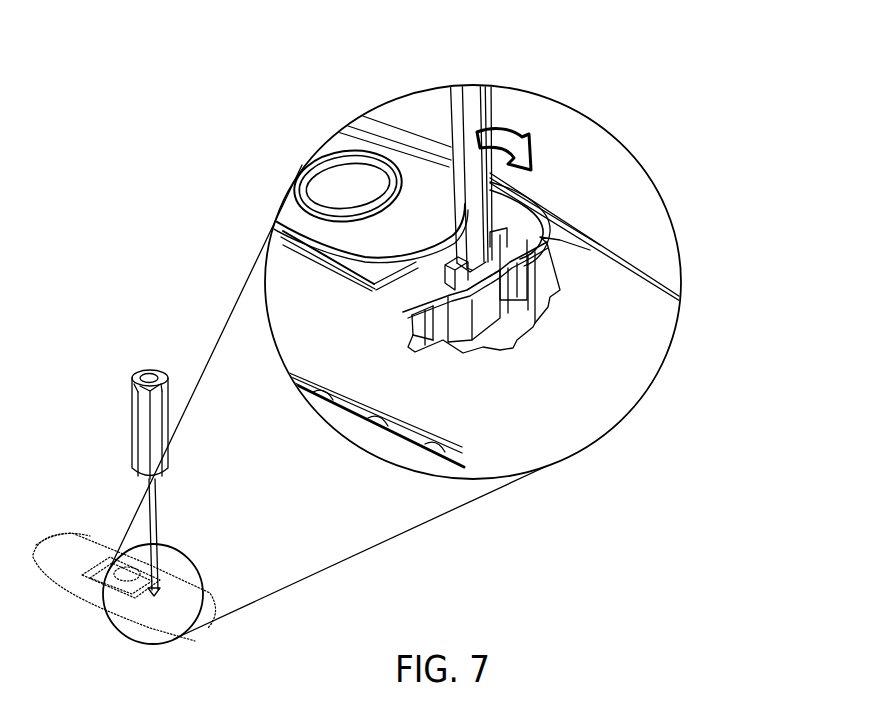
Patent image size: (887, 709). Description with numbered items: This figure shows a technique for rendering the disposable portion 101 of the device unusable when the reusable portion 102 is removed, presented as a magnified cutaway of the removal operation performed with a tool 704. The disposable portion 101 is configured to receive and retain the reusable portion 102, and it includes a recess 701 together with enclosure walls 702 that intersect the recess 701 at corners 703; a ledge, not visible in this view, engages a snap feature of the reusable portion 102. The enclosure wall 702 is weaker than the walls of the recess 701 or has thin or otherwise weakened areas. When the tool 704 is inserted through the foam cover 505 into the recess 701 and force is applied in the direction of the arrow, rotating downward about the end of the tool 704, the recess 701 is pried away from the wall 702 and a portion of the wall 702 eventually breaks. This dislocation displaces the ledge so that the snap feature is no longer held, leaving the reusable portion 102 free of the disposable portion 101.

The disposable portion 101 is at (297, 310).
The reusable portion 102 is at (297, 212).
The foam cover 505 is at (643, 332).
The recess 701 is at (488, 318).
The enclosure walls 702 is at (533, 283).
The corners 703 is at (515, 280).
The tool 704 is at (487, 117).